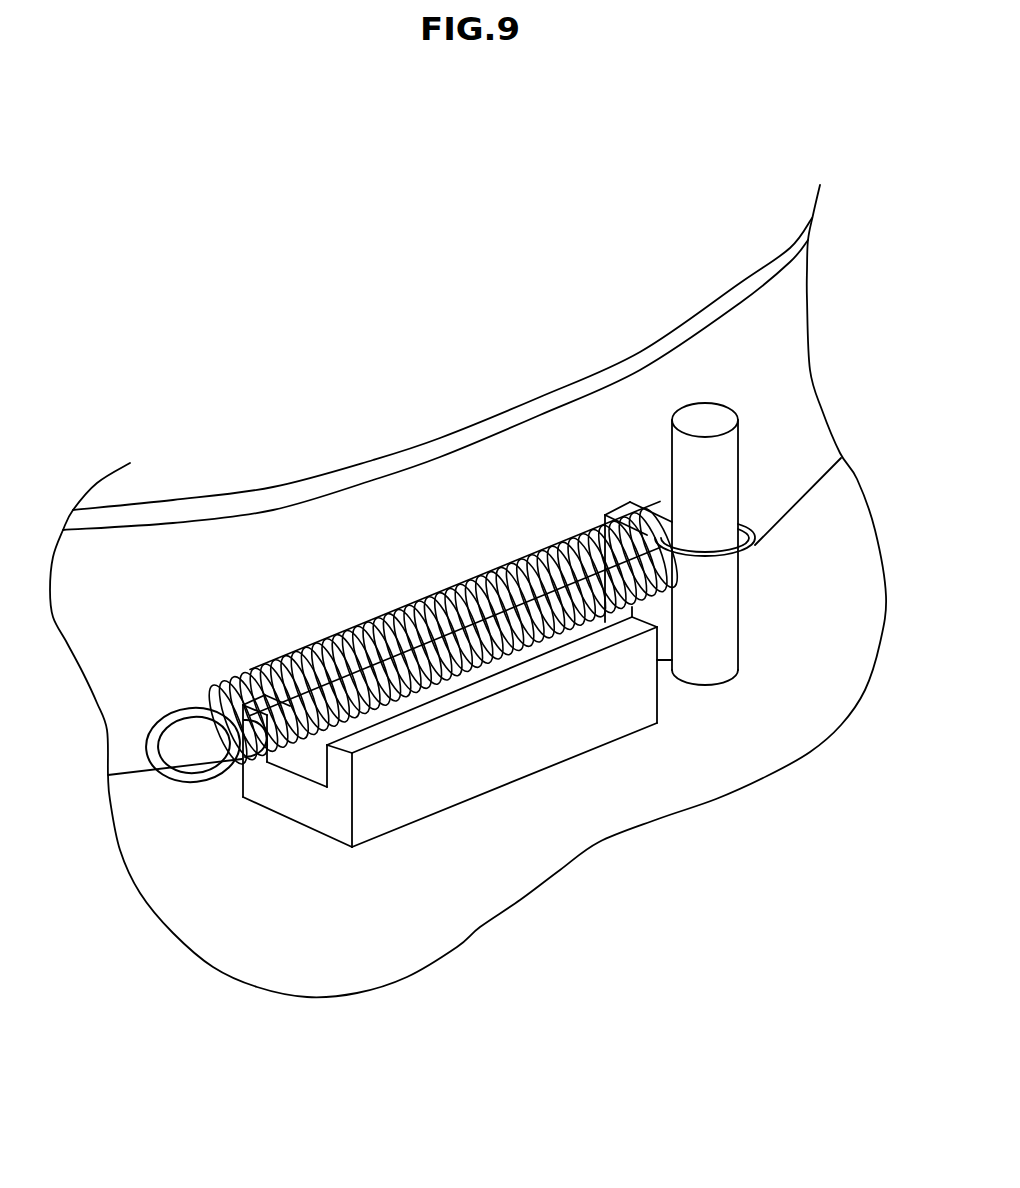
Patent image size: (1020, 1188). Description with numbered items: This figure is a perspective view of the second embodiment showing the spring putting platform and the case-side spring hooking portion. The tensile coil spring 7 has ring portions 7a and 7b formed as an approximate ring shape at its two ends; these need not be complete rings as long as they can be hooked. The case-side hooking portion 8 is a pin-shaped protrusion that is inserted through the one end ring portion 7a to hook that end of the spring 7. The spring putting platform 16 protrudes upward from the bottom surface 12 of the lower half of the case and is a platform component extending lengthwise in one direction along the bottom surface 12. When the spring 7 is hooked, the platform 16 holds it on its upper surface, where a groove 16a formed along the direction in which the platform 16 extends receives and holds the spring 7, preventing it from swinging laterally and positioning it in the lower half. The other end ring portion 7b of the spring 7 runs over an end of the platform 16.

The tensile coil spring 7 is at (437, 593).
The ring portion 7a is at (742, 563).
The ring portion 7b is at (168, 716).
The case-side hooking portion 8 is at (714, 481).
The bottom surface 12 is at (330, 956).
The spring putting platform 16 is at (463, 806).
The groove 16a is at (323, 765).